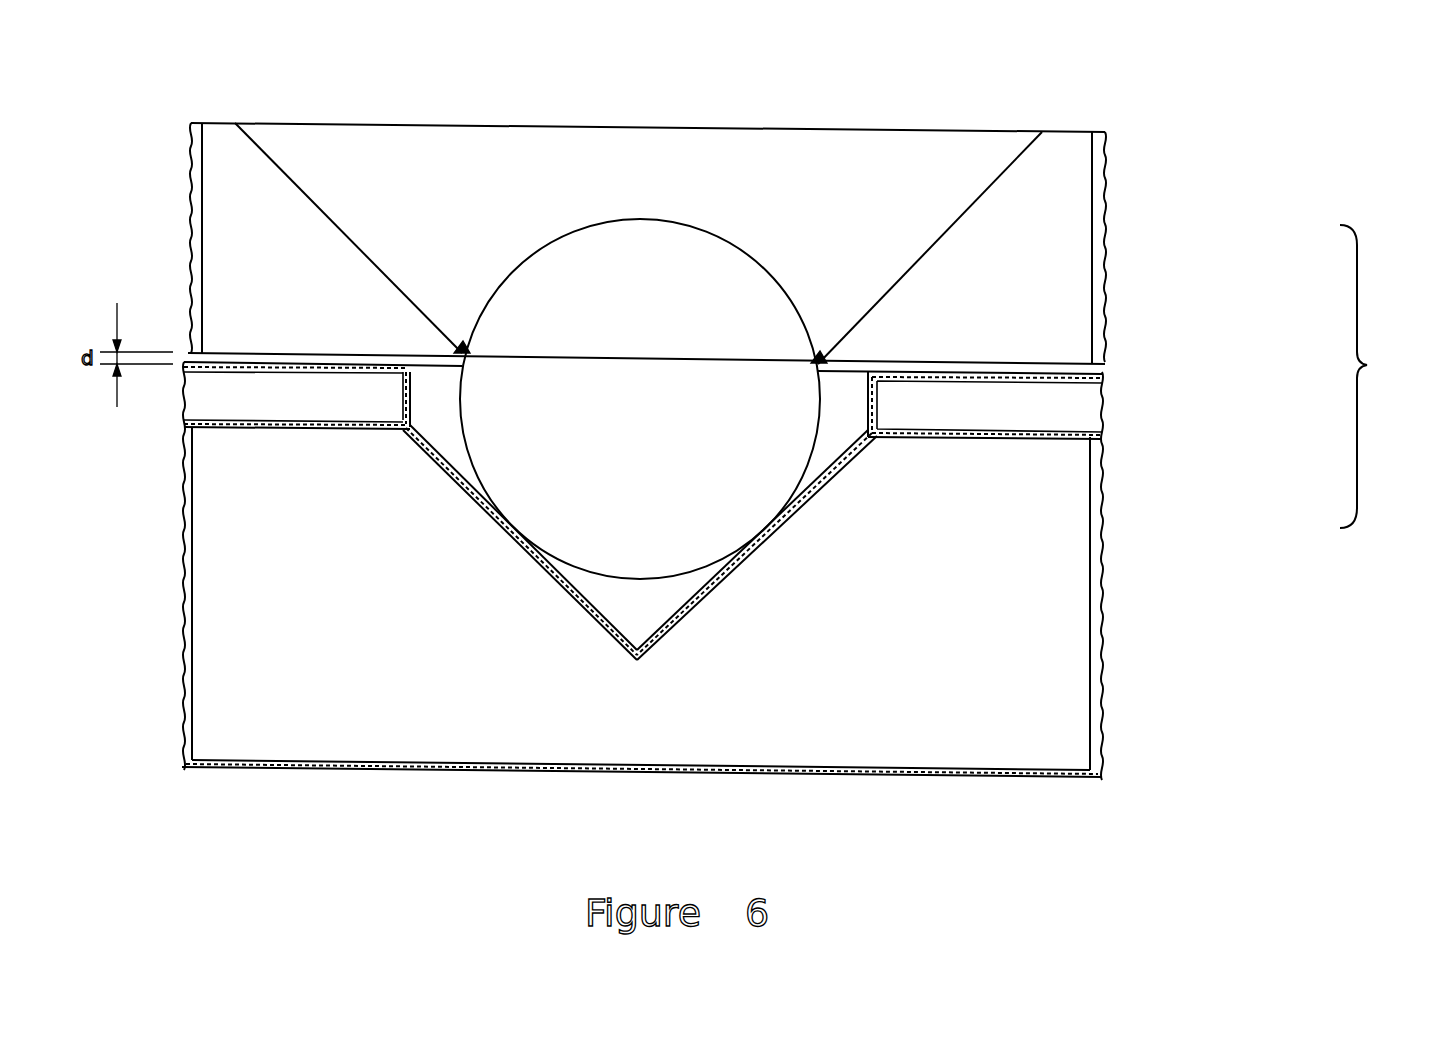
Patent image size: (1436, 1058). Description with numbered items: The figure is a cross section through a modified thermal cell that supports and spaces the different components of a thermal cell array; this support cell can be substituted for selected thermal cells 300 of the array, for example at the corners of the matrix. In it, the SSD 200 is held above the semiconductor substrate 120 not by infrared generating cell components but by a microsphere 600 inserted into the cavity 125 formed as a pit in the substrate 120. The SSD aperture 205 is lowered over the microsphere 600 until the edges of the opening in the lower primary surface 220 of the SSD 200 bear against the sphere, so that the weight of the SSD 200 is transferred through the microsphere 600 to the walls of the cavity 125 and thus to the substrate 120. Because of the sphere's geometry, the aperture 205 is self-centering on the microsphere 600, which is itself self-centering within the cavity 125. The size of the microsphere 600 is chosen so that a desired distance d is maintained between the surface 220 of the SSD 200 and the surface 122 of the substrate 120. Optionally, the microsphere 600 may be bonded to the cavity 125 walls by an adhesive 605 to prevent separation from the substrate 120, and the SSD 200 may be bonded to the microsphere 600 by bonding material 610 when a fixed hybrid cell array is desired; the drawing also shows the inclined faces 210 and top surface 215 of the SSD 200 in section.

The SSD 200 is at (763, 216).
The SSD aperture 205 is at (823, 167).
The angled groove faces of upper block 210 is at (288, 176).
The top surface of upper block 215 is at (1078, 133).
The bonding material 610 is at (463, 352).
The semiconductor substrate 120 is at (696, 603).
The surface of the substrate 122 is at (183, 373).
The lower primary surface of the SSD 220 is at (1100, 382).
The microsphere 600 is at (467, 450).
The cavity 125 is at (620, 603).
The adhesive 605 is at (725, 565).
The thermal cell 300 is at (1385, 376).